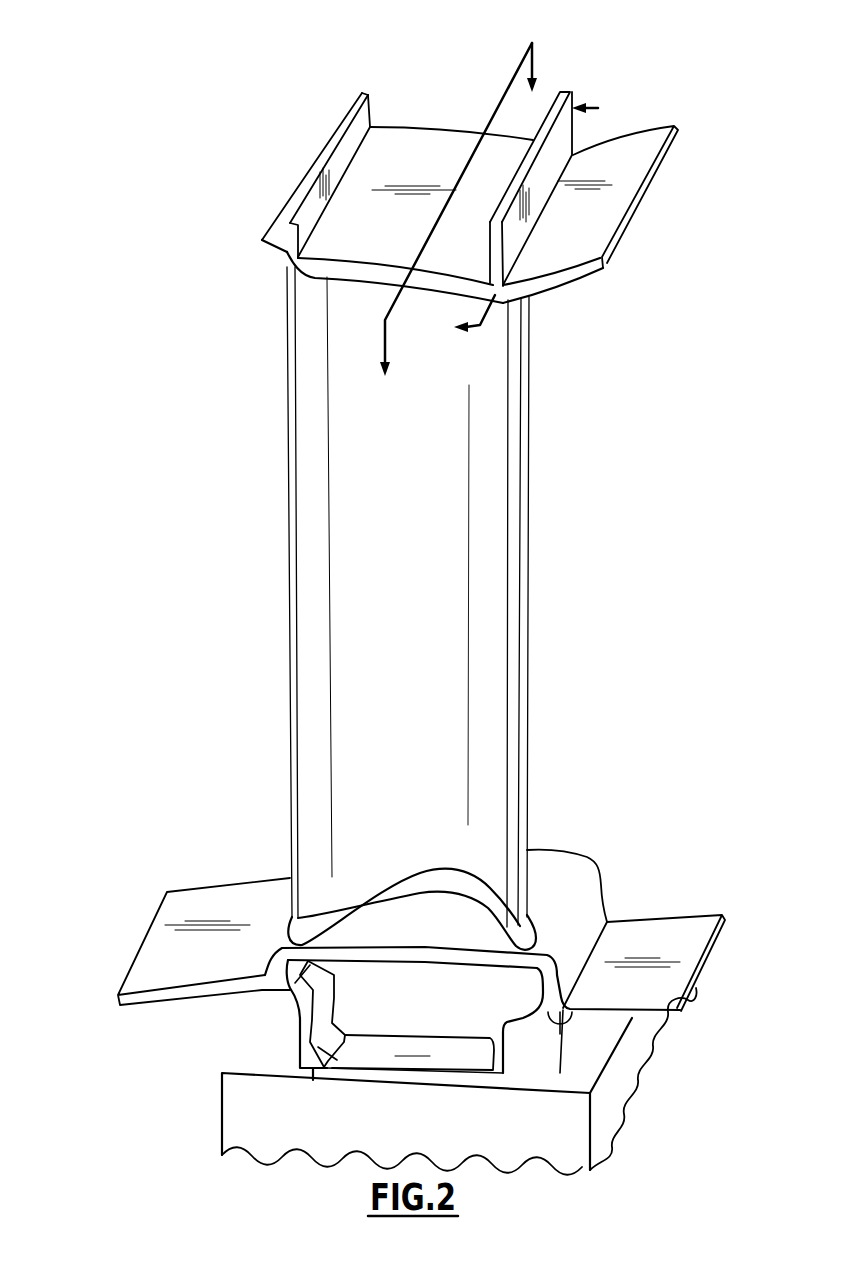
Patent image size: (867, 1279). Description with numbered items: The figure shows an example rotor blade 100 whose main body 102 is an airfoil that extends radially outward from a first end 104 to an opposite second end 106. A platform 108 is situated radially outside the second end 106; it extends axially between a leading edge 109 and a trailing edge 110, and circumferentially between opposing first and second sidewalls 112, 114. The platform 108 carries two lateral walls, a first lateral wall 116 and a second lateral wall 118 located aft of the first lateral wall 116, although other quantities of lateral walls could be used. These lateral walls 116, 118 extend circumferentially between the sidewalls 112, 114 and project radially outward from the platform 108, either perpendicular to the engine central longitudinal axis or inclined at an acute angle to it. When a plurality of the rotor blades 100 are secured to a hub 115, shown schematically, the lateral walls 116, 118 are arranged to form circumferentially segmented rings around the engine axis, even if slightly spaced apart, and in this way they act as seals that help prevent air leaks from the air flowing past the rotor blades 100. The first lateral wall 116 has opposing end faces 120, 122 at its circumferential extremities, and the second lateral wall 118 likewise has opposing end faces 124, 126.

The rotor blade 100 is at (200, 428).
The main body 102 is at (490, 543).
The first end 104 is at (618, 832).
The second end 106 is at (628, 385).
The platform 108 is at (443, 148).
The leading edge 109 is at (662, 210).
The trailing edge 110 is at (292, 147).
The first sidewall 112 is at (317, 268).
The second sidewall 114 is at (386, 113).
The hub 115 is at (240, 1117).
The first lateral wall 116 is at (537, 182).
The second lateral wall 118 is at (348, 108).
The end face 120 is at (493, 258).
The end face 122 is at (578, 82).
The end face 124 is at (292, 236).
The end face 126 is at (360, 80).